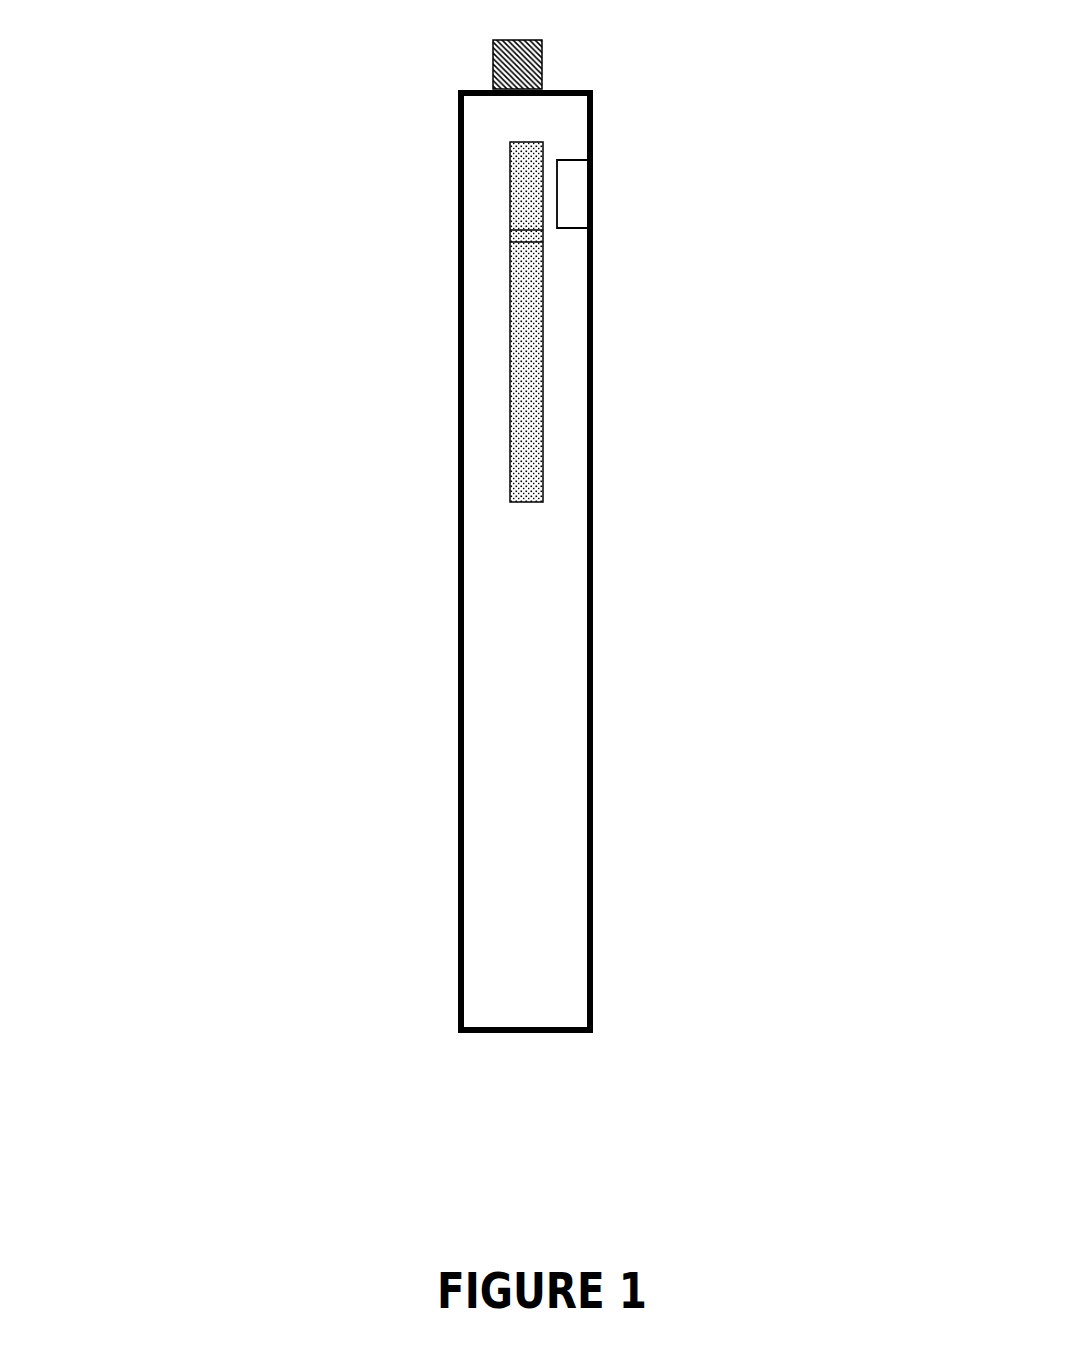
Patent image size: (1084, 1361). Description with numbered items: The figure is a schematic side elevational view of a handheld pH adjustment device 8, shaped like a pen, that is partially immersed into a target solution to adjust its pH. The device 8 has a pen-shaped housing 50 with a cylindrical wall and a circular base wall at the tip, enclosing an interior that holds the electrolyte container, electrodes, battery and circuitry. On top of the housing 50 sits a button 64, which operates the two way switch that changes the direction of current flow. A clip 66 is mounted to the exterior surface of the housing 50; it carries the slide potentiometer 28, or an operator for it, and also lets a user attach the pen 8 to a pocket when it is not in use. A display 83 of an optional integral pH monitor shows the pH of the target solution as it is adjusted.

The handheld device 8 is at (272, 552).
The housing 50 is at (458, 415).
The button 64 is at (493, 58).
The clip 66 is at (528, 360).
The slide potentiometer 28 is at (514, 246).
The display 83 is at (573, 177).